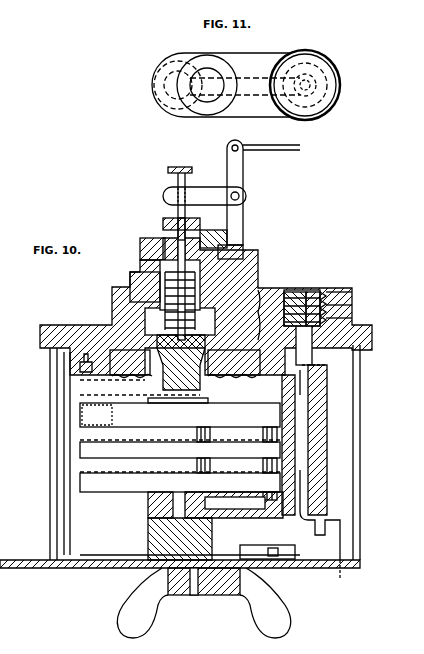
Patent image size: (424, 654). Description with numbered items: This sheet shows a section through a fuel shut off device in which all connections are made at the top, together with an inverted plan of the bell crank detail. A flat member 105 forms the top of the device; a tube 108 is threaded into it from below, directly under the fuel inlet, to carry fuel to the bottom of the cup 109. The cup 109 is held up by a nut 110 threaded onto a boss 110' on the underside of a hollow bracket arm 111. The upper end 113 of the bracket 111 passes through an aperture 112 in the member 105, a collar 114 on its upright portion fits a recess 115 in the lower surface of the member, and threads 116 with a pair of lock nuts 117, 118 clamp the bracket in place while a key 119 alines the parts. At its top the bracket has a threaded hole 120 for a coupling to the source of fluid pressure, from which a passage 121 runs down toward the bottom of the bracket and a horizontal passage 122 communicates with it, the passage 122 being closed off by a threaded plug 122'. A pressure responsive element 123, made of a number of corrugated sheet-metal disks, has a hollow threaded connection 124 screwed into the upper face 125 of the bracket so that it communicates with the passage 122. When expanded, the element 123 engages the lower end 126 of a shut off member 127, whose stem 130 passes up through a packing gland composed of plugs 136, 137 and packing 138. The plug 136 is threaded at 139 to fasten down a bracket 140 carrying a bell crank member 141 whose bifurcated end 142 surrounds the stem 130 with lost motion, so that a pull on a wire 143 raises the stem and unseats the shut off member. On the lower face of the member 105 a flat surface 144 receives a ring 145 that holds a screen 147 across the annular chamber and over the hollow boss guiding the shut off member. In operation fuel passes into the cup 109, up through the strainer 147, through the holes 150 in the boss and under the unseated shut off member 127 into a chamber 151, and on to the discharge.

In FIG. 10, the flat member 105 is at (110, 325).
In FIG. 10, the tube 108 is at (295, 550).
In FIG. 10, the cup 109 is at (145, 560).
In FIG. 10, the nut 110 is at (186, 603).
In FIG. 11, the boss 110' is at (204, 75).
In FIG. 10, the boss 110' is at (204, 594).
In FIG. 11, the bracket arm 111 is at (268, 48).
In FIG. 10, the bracket arm 111 is at (148, 536).
In FIG. 10, the aperture 112 is at (249, 306).
In FIG. 10, the upper end of bracket 113 is at (330, 300).
In FIG. 11, the collar 114 is at (320, 55).
In FIG. 10, the collar 114 is at (320, 400).
In FIG. 10, the recess 115 is at (316, 380).
In FIG. 10, the threads 116 is at (340, 292).
In FIG. 10, the lock nut 117 is at (350, 302).
In FIG. 10, the lock nut 118 is at (350, 312).
In FIG. 10, the key 119 is at (309, 301).
In FIG. 10, the threaded hole 120 is at (298, 298).
In FIG. 11, the passage 121 is at (330, 64).
In FIG. 10, the passage 121 is at (318, 432).
In FIG. 11, the horizontal passage 122 is at (285, 81).
In FIG. 10, the horizontal passage 122 is at (323, 515).
In FIG. 10, the threaded plug 122' is at (337, 581).
In FIG. 10, the pressure responsive element 123 is at (180, 449).
In FIG. 11, the threaded connection 124 is at (160, 65).
In FIG. 10, the threaded connection 124 is at (160, 510).
In FIG. 10, the upper face of bracket 125 is at (148, 503).
In FIG. 10, the lower end of shut off member 126 is at (200, 394).
In FIG. 10, the shut off member 127 is at (140, 389).
In FIG. 10, the stem 130 is at (168, 176).
In FIG. 10, the plug 136 is at (130, 268).
In FIG. 10, the plug 137 is at (172, 218).
In FIG. 10, the packing 138 is at (141, 241).
In FIG. 10, the threads 139 is at (215, 238).
In FIG. 10, the bracket 140 is at (243, 252).
In FIG. 10, the bell crank member 141 is at (246, 176).
In FIG. 10, the bifurcated end 142 is at (180, 195).
In FIG. 11, the wire 143 is at (285, 142).
In FIG. 10, the flat surface 144 is at (70, 375).
In FIG. 10, the ring 145 is at (86, 375).
In FIG. 10, the screen 147 is at (234, 364).
In FIG. 10, the holes 150 is at (131, 364).
In FIG. 10, the chamber 151 is at (145, 316).